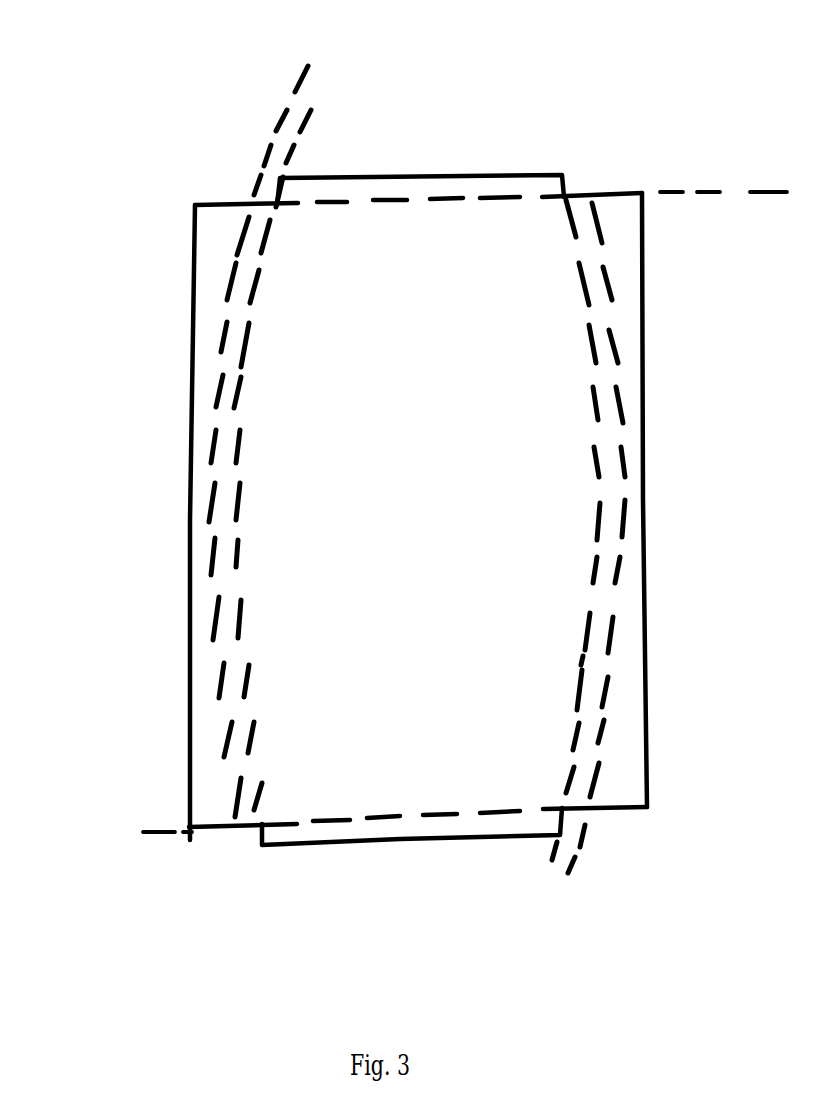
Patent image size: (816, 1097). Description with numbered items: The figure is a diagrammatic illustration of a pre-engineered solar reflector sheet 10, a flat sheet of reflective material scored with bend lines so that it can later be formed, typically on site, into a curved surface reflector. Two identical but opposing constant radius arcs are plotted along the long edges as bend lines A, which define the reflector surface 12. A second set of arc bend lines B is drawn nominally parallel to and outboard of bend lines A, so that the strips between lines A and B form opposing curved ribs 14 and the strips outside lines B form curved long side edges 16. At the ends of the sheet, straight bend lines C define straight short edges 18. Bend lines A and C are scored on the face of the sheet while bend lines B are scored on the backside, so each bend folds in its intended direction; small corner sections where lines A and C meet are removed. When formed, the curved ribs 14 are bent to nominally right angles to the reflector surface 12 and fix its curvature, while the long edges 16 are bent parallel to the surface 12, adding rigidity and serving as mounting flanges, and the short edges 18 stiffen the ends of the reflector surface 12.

The pre-engineered solar reflector sheet 10 is at (218, 101).
The reflector surface 12 is at (445, 597).
The curved rib 14 is at (232, 393).
The long side edge 16 is at (193, 322).
The straight short edge 18 is at (403, 175).
The bend line A is at (300, 128).
The bend line B is at (303, 80).
The bend line C is at (712, 190).